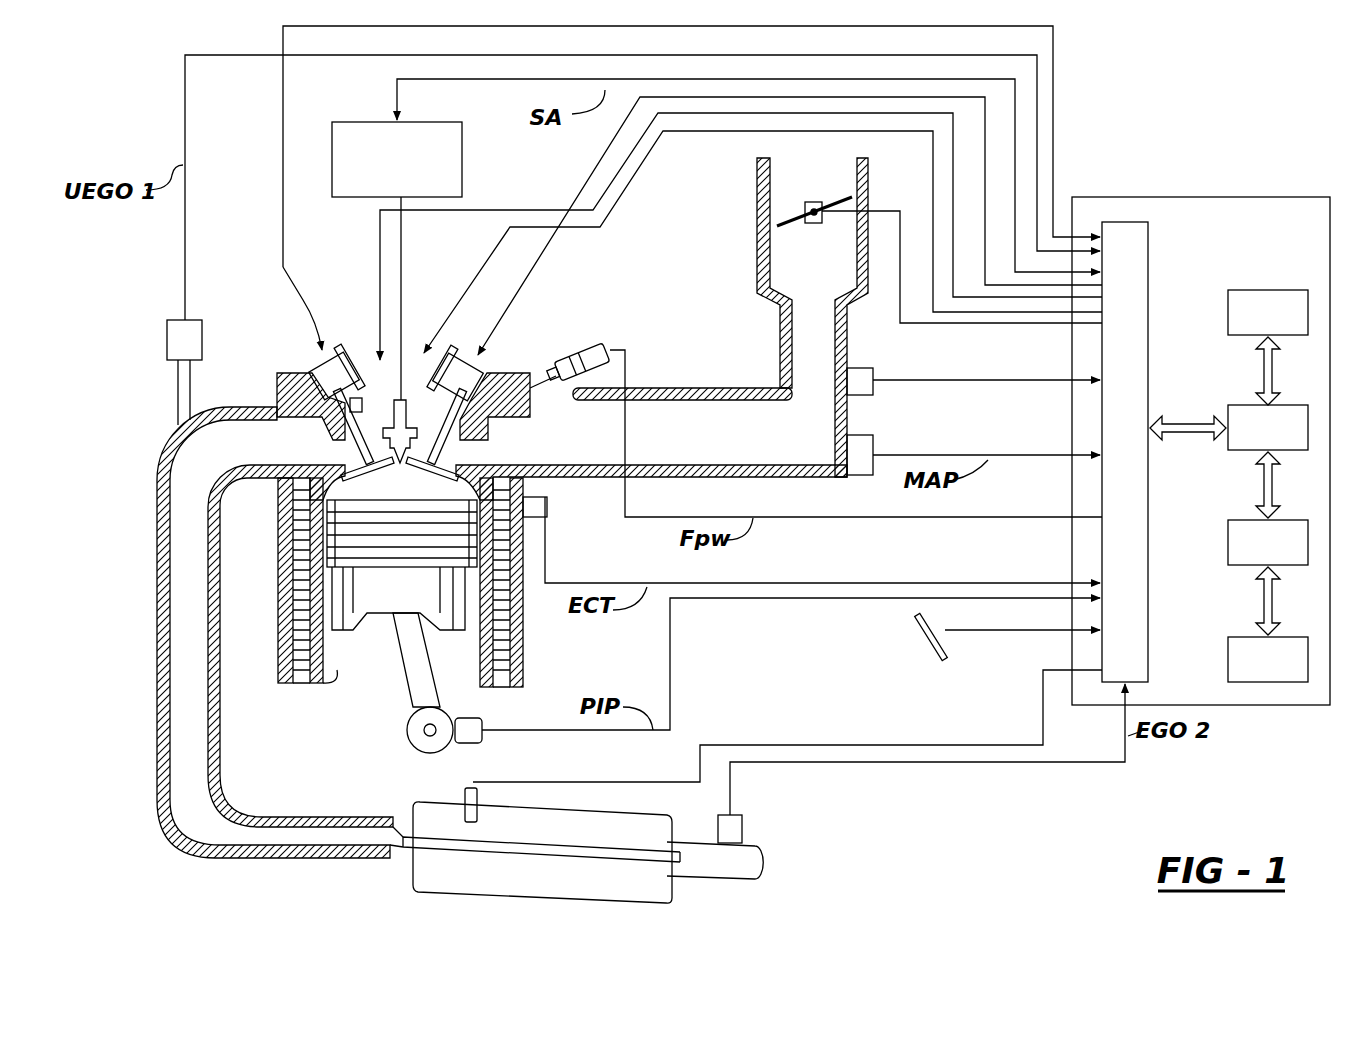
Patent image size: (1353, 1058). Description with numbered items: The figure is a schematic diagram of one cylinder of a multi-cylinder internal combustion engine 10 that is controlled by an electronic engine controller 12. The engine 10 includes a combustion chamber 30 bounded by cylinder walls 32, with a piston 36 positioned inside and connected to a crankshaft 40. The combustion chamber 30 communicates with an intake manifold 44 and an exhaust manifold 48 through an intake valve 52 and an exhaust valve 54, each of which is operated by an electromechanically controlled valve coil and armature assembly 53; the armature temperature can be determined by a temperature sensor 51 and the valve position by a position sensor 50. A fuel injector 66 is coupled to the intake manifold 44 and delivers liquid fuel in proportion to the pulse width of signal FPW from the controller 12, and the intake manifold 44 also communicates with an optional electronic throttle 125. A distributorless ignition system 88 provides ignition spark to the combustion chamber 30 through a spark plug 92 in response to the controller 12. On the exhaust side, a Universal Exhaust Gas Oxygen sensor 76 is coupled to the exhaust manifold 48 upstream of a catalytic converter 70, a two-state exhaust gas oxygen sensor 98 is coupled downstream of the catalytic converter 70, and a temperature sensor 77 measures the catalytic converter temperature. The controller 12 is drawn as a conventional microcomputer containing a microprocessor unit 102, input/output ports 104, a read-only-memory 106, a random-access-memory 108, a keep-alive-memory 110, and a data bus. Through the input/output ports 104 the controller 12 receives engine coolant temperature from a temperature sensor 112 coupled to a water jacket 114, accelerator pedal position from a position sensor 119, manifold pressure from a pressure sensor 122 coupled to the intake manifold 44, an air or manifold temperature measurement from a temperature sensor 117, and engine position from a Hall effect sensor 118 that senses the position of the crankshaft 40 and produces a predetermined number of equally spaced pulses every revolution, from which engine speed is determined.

The internal combustion engine 10 is at (280, 372).
The electronic engine controller 12 is at (1192, 197).
The combustion chamber 30 is at (401, 485).
The cylinder walls 32 is at (337, 680).
The piston 36 is at (393, 598).
The crankshaft 40 is at (407, 732).
The intake manifold 44 is at (745, 441).
The exhaust manifold 48 is at (185, 508).
The position sensor 50 is at (362, 350).
The temperature sensor 51 is at (436, 355).
The intake valve 52 is at (470, 453).
The valve coil and armature assembly 53 is at (328, 352).
The exhaust valve 54 is at (347, 452).
The fuel injector 66 is at (556, 352).
The catalytic converter 70 is at (490, 895).
The Universal Exhaust Gas Oxygen (UEGO) sensor 76 is at (167, 330).
The temperature sensor 77 is at (458, 807).
The distributorless ignition system 88 is at (462, 160).
The spark plug 92 is at (403, 355).
The two-state exhaust gas oxygen sensor 98 is at (752, 813).
The microprocessor unit 102 is at (1240, 405).
The input/output ports 104 is at (1150, 248).
The read-only-memory 106 is at (1270, 290).
The random-access-memory 108 is at (1240, 520).
The keep-alive-memory 110 is at (1240, 637).
The temperature sensor 112 is at (548, 495).
The water jacket 114 is at (297, 683).
The temperature sensor 117 is at (880, 362).
The Hall effect sensor 118 is at (468, 745).
The position sensor 119 is at (912, 650).
The pressure sensor 122 is at (878, 440).
The electronic throttle 125 is at (800, 190).